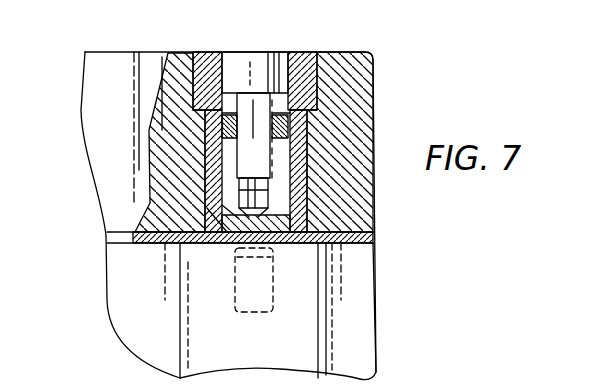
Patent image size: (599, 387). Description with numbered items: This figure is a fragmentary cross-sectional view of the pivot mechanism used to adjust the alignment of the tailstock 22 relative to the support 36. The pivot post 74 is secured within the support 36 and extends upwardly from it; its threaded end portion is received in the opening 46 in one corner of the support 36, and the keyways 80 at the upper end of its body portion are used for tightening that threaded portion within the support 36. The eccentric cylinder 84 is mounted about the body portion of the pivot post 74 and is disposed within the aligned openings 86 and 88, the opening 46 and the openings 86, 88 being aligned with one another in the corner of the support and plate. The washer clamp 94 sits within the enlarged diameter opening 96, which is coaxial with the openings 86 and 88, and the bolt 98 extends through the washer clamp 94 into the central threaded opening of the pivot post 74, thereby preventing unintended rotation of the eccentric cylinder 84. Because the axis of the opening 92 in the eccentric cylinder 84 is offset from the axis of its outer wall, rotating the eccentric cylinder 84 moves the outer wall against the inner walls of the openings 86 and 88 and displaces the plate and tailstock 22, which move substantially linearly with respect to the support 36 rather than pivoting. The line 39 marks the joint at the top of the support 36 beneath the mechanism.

The tailstock 22 is at (362, 217).
The support 36 is at (130, 304).
The joint line 39 is at (373, 238).
The opening 46 is at (272, 296).
The pivot post 74 is at (373, 285).
The keyways 80 is at (223, 139).
The eccentric cylinder 84 is at (297, 145).
The opening 86 is at (299, 244).
The opening 88 is at (303, 200).
The opening 92 is at (219, 194).
The washer clamp 94 is at (302, 52).
The enlarged diameter opening 96 is at (313, 70).
The bolt 98 is at (254, 64).